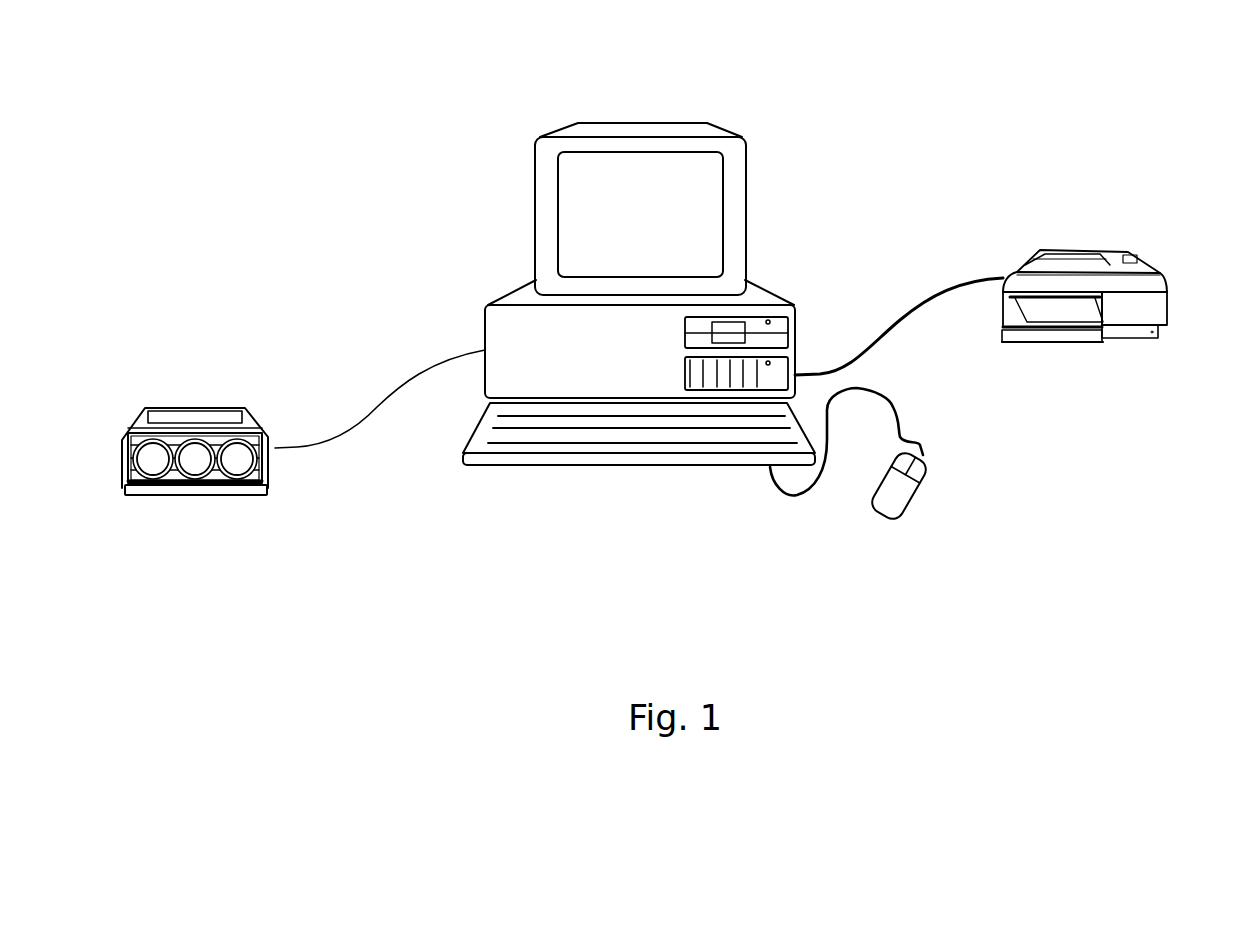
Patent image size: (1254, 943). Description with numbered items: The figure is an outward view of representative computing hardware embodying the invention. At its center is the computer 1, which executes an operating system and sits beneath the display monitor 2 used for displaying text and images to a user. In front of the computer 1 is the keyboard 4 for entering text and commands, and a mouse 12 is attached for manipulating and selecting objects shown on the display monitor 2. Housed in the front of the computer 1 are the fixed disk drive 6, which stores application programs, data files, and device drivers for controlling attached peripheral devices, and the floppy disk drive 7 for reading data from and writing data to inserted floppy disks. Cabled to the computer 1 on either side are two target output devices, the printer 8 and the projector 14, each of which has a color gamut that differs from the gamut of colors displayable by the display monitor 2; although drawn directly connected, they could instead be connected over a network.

The computer 1 is at (777, 107).
The display monitor 2 is at (538, 228).
The keyboard 4 is at (528, 463).
The fixed disk drive 6 is at (718, 390).
The floppy disk drive 7 is at (788, 340).
The printer 8 is at (1168, 296).
The mouse 12 is at (888, 525).
The projector 14 is at (198, 410).